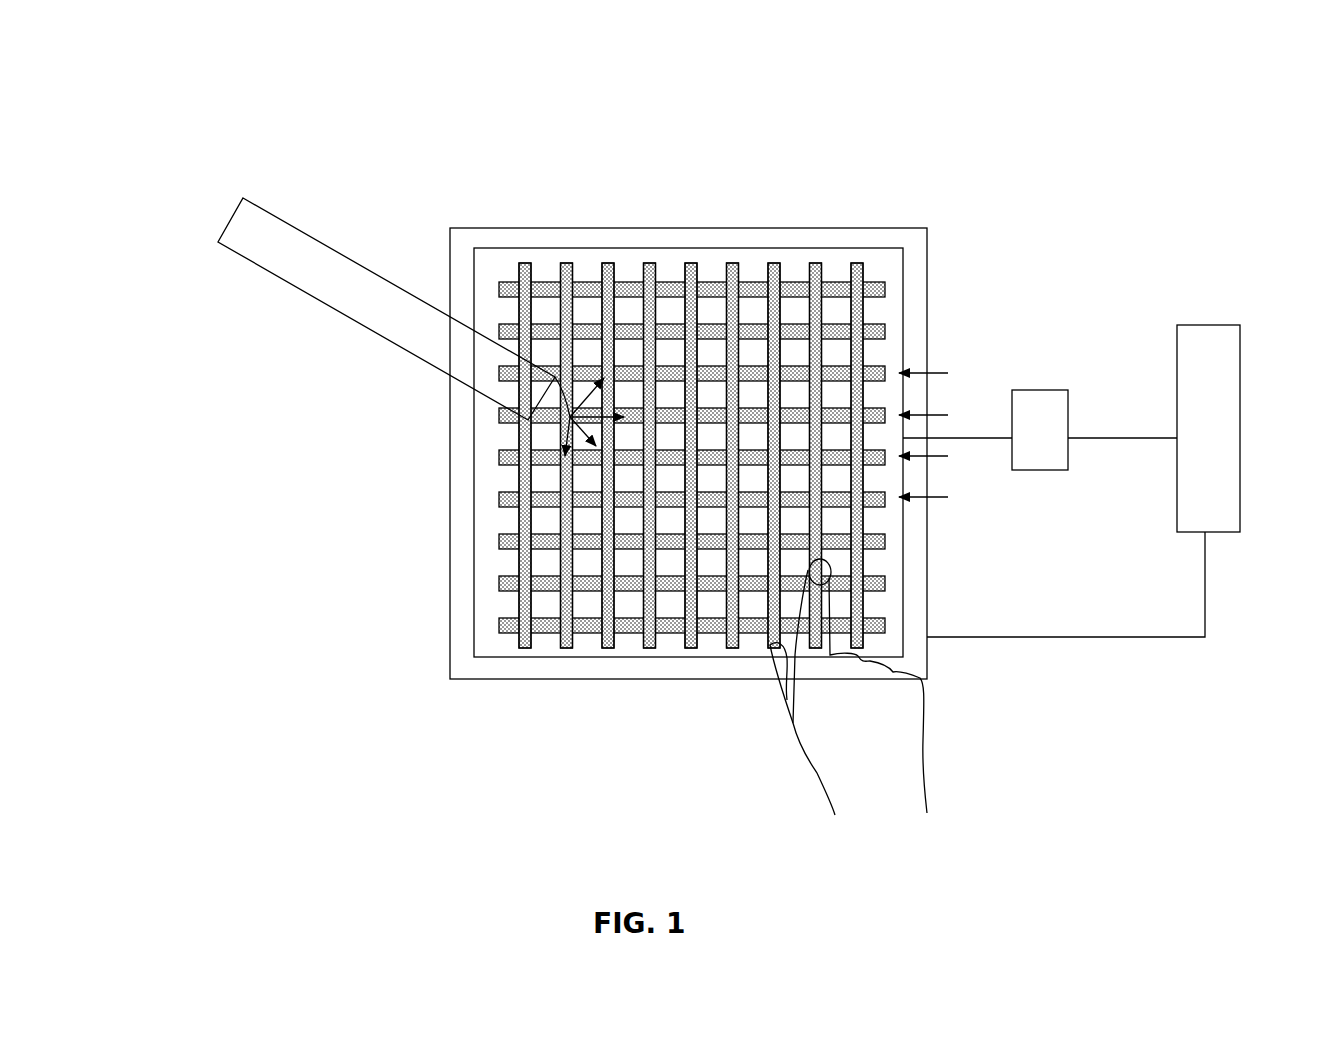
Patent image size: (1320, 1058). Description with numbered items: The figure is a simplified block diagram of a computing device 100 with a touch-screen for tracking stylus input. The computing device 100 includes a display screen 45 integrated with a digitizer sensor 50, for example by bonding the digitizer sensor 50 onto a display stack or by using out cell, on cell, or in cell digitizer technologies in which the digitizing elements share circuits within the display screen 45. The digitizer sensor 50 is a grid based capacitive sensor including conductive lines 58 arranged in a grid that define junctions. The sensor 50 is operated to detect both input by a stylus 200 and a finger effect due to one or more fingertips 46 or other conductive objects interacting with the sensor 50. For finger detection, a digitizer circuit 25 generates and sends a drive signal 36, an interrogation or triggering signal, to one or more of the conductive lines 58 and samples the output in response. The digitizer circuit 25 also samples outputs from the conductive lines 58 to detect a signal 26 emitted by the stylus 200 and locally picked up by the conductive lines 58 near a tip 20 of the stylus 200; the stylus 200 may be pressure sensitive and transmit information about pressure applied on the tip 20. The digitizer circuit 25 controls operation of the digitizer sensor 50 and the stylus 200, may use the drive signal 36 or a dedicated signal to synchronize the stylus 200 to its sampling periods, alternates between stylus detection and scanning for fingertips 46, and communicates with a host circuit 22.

The computing device 100 is at (612, 128).
The stylus 200 is at (390, 282).
The conductive lines 58 is at (557, 276).
The display screen 45 is at (793, 228).
The digitizer sensor 50 is at (904, 298).
The tip 20 is at (560, 408).
The signal 26 is at (575, 428).
The drive signal 36 is at (916, 420).
The digitizer circuit 25 is at (1038, 390).
The host circuit 22 is at (1208, 325).
The fingertips 46 is at (810, 566).